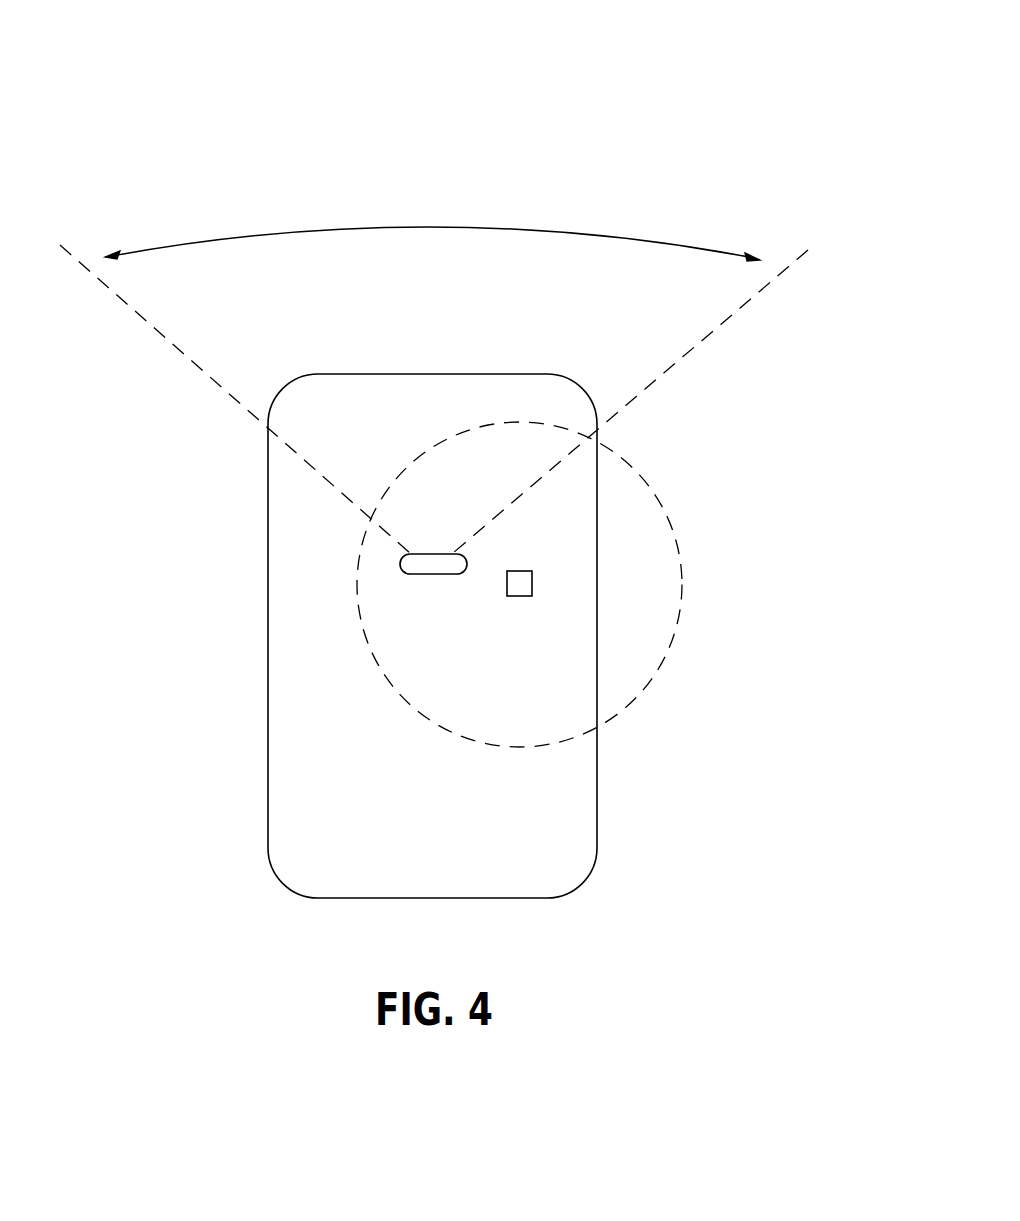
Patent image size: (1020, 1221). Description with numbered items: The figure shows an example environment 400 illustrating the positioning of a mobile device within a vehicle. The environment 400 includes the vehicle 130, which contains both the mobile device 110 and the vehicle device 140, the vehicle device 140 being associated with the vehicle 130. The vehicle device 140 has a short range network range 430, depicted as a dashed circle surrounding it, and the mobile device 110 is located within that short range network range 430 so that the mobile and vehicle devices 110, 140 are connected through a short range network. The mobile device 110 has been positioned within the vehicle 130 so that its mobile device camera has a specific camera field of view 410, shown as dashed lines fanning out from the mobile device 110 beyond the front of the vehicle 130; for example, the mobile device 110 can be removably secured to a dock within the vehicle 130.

The environment 400 is at (449, 457).
The camera field of view 410 is at (434, 390).
The vehicle 130 is at (288, 468).
The mobile device 110 is at (405, 563).
The vehicle device 140 is at (507, 596).
The short range network range 430 is at (664, 652).